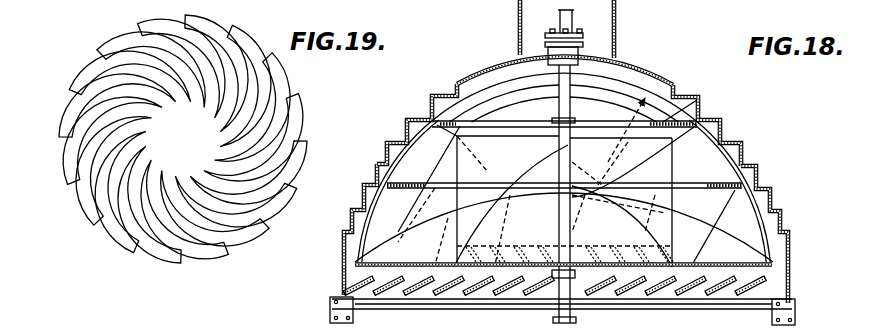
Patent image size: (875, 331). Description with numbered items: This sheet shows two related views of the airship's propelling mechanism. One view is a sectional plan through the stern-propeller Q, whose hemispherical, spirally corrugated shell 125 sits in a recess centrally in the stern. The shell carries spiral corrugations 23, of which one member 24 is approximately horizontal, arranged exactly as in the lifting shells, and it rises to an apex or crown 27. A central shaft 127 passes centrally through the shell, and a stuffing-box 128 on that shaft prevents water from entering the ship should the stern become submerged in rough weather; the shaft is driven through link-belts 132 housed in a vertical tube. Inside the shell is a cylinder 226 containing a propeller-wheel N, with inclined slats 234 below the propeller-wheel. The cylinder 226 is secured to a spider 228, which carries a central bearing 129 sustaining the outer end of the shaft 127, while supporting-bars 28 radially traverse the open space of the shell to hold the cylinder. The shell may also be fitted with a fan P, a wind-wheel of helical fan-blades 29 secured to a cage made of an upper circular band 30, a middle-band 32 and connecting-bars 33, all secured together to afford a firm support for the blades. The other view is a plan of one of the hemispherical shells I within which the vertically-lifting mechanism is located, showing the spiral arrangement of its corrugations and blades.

In FIG. 19, the spiral corrugations 23 is at (305, 120).
In FIG. 18, the spiral corrugations 23 is at (380, 152).
In FIG. 18, the horizontal member of the spiral corrugations 24 is at (389, 137).
In FIG. 18, the apex or crown 27 is at (636, 68).
In FIG. 18, the supporting-bars 28 is at (786, 236).
In FIG. 18, the helical fan-blades 29 is at (564, 196).
In FIG. 18, the upper circular band 30 is at (518, 120).
In FIG. 18, the middle-band 32 is at (418, 181).
In FIG. 18, the connecting-bars 33 is at (411, 150).
In FIG. 18, the hemispherical spirally corrugated shell 125 is at (345, 229).
In FIG. 18, the central shaft 127 is at (576, 22).
In FIG. 18, the stuffing-box 128 is at (540, 46).
In FIG. 18, the central bearing 129 is at (577, 320).
In FIG. 18, the link-belts 132 is at (623, 5).
In FIG. 18, the cylinder 226 is at (482, 106).
In FIG. 18, the spider 228 is at (329, 306).
In FIG. 18, the inclined slats 234 is at (351, 280).
In FIG. 18, the propeller-wheel N is at (597, 248).
In FIG. 18, the wind-wheel (fan) P is at (391, 218).
In FIG. 18, the stern-propeller Q is at (754, 96).
In FIG. 19, the hemispherical shell I is at (124, 33).